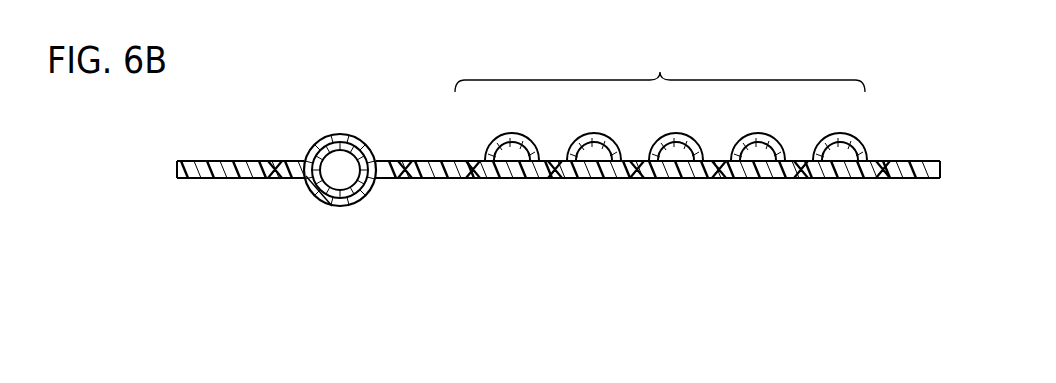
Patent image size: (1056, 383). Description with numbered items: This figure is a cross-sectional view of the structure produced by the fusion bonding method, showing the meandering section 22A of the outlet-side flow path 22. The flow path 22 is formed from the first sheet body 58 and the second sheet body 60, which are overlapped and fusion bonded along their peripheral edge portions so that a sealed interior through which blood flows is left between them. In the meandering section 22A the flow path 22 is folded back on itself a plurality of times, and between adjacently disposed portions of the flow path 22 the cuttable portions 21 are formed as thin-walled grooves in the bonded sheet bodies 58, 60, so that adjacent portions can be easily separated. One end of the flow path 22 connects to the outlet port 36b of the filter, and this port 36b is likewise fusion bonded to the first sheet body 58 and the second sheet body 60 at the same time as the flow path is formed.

The cuttable portion 21 is at (272, 160).
The outlet-side flow path 22 is at (832, 166).
The meandering section 22A is at (661, 135).
The outlet port 36b is at (318, 142).
The first sheet body 58 is at (341, 207).
The second sheet body 60 is at (340, 134).